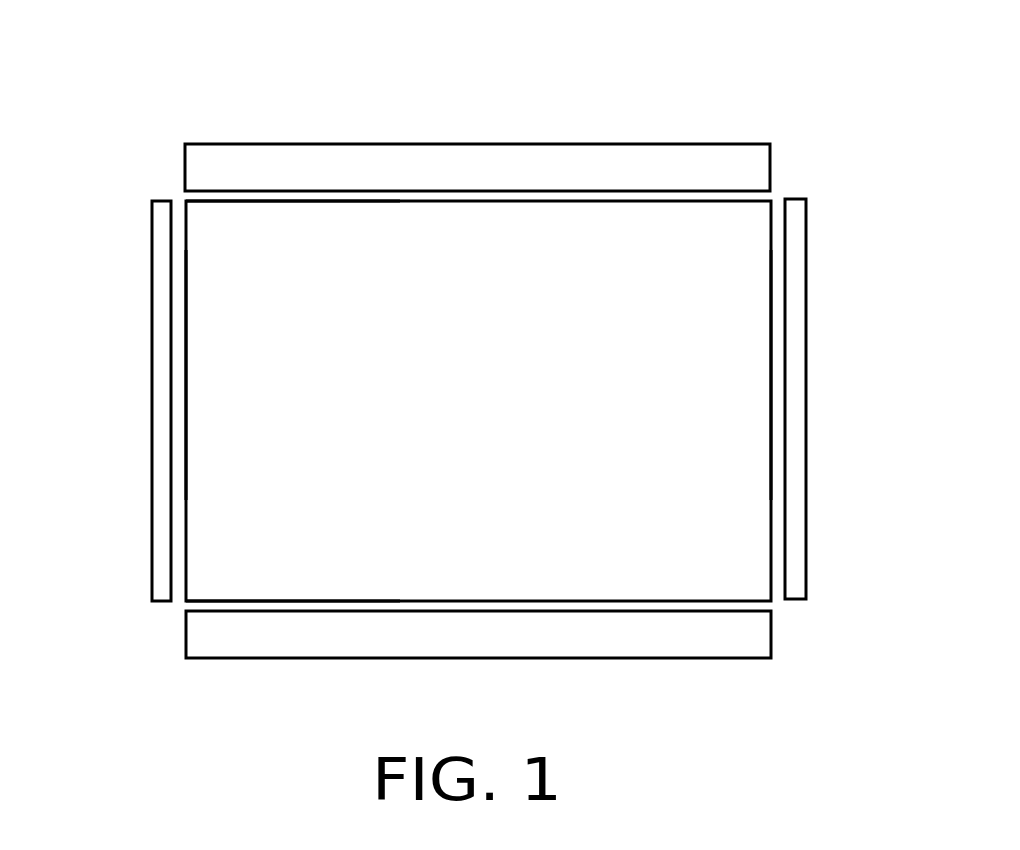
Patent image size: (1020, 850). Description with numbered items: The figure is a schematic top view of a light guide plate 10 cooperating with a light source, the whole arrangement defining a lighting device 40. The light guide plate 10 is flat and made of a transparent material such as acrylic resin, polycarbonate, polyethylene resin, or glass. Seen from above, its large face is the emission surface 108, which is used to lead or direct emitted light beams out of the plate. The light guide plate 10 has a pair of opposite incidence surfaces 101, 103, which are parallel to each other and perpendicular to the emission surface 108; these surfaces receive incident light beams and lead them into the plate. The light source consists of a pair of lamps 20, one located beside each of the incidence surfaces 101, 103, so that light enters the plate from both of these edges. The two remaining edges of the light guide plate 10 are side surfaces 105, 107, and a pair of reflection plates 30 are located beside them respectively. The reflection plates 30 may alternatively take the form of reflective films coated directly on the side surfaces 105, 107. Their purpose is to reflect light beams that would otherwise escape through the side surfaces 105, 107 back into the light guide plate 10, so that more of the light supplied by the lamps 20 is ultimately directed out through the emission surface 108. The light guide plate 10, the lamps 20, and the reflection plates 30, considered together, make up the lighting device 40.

The light guide plate 10 is at (771, 200).
The lamps 20 is at (549, 163).
The reflection plates 30 is at (795, 388).
The lighting device 40 is at (675, 108).
The incidence surface 101 is at (186, 202).
The incidence surface 103 is at (186, 602).
The side surface 105 is at (186, 383).
The side surface 107 is at (771, 285).
The emission surface 108 is at (362, 225).